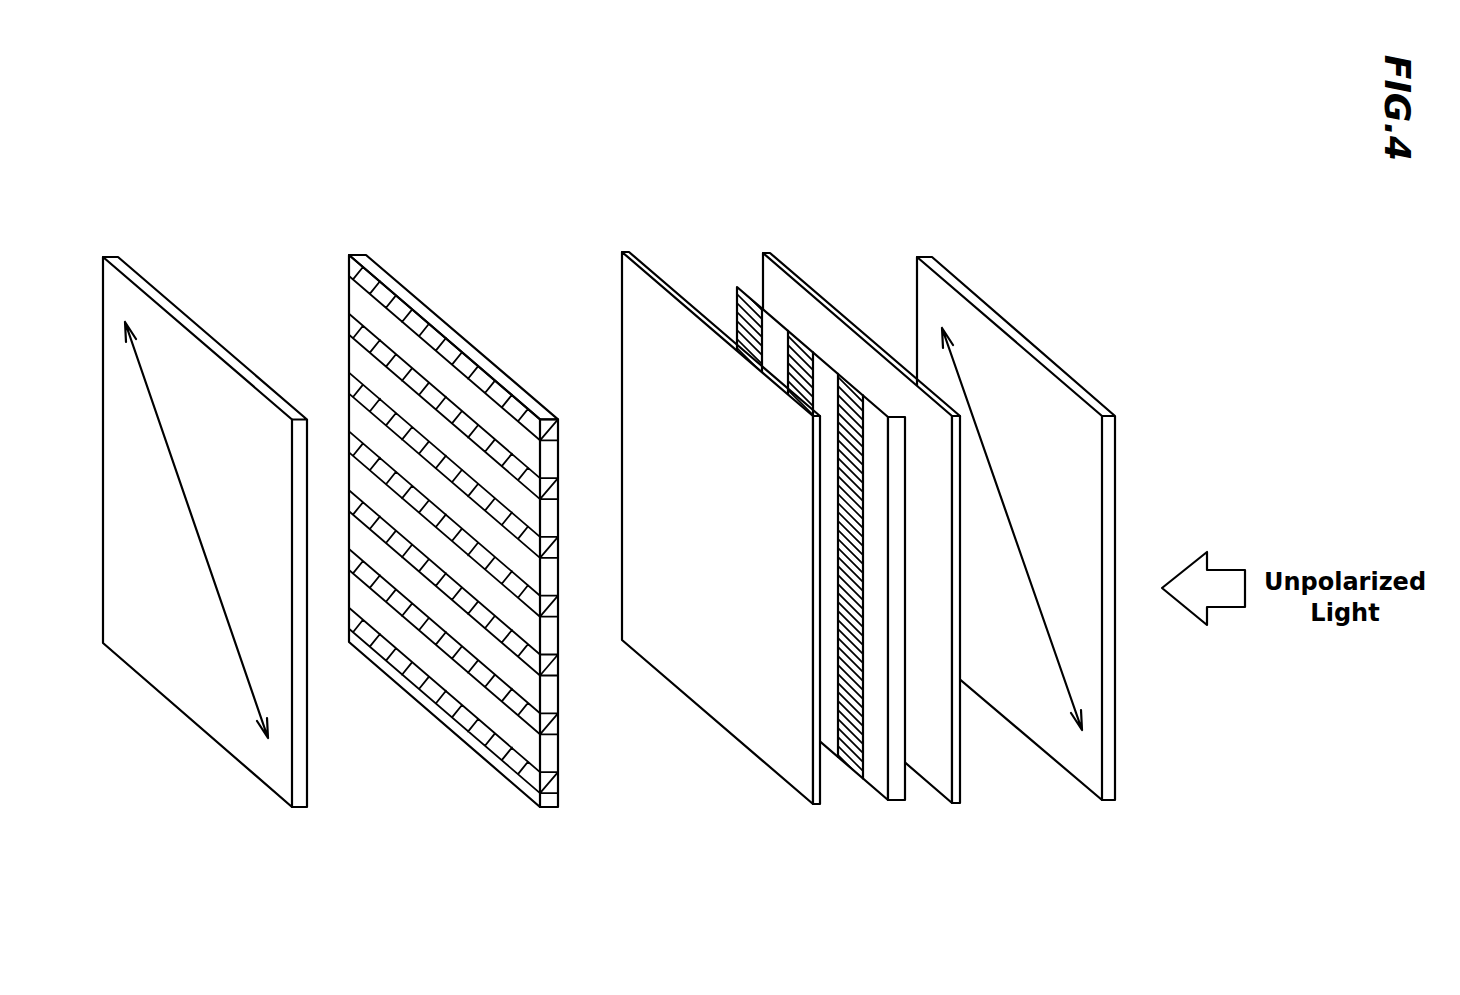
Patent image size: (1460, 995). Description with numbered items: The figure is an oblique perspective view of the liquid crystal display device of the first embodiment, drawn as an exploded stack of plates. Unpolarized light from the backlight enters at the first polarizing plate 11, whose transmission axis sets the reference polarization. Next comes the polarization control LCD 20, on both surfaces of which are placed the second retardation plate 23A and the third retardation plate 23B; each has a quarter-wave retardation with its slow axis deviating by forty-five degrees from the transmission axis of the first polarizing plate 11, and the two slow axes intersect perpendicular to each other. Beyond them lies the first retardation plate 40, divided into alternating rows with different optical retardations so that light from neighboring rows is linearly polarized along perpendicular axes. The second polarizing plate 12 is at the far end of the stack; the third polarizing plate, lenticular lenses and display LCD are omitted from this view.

The first polarizing plate 11 is at (918, 257).
The second polarizing plate 12 is at (105, 257).
The polarization control LCD 20 is at (745, 287).
The second retardation plate 23A is at (783, 268).
The third retardation plate 23B is at (634, 252).
The first retardation plate 40 is at (367, 255).